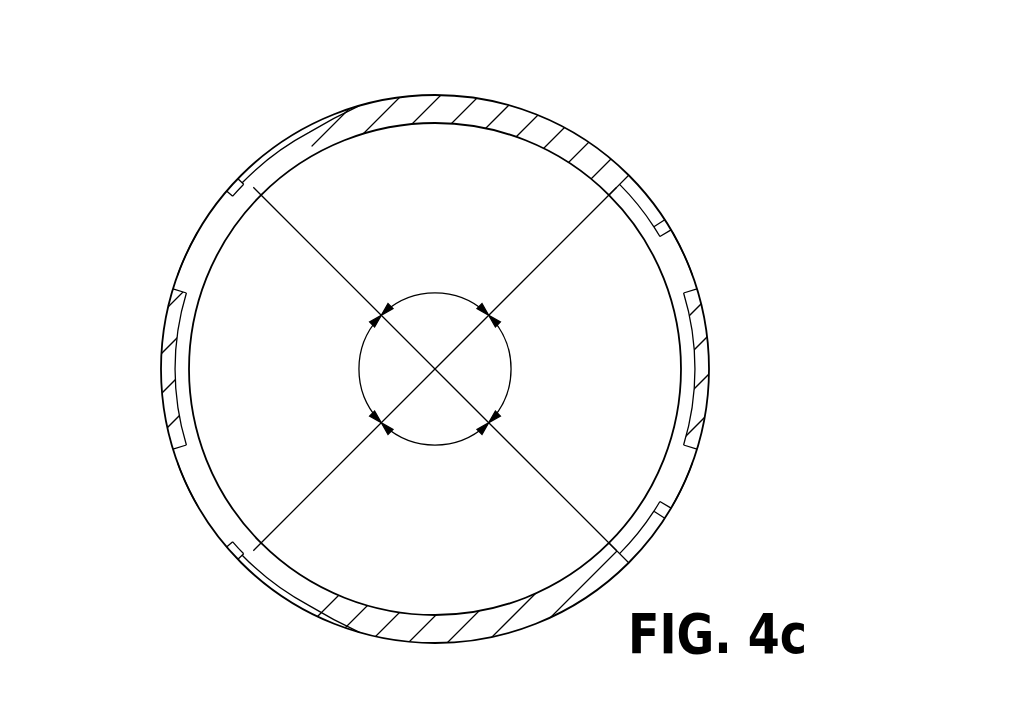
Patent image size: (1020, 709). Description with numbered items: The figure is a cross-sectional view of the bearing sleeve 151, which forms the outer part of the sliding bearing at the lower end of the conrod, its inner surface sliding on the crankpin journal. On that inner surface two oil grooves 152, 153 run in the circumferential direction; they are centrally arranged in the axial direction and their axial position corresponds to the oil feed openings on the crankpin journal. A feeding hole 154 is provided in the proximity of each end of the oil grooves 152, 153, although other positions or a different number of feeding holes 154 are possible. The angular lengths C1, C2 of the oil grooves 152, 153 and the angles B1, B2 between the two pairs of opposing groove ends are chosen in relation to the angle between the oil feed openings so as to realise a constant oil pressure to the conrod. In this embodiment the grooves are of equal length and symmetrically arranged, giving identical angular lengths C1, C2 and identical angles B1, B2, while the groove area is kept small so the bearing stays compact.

The bearing sleeve 151 is at (640, 98).
The oil groove 152 is at (183, 368).
The oil groove 153 is at (688, 368).
The feeding hole 154 is at (195, 257).
The angle between opposing ends of the oil grooves B1 is at (434, 450).
The angle between opposing ends of the oil grooves B2 is at (434, 289).
The angular length of oil groove C1 is at (355, 368).
The angular length of oil groove C2 is at (517, 368).